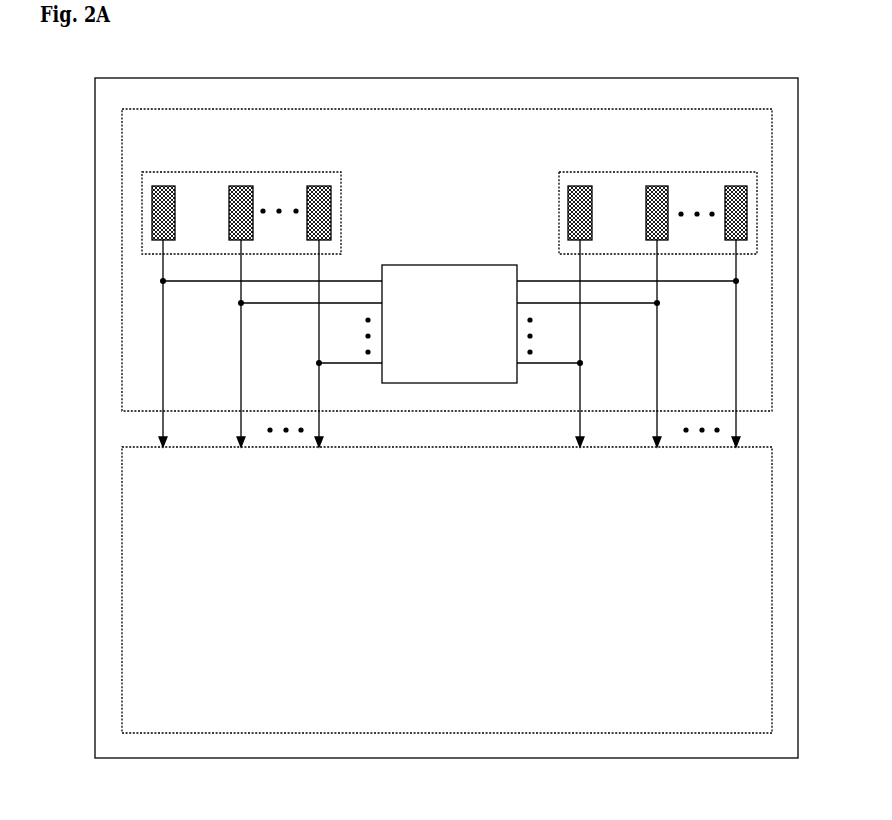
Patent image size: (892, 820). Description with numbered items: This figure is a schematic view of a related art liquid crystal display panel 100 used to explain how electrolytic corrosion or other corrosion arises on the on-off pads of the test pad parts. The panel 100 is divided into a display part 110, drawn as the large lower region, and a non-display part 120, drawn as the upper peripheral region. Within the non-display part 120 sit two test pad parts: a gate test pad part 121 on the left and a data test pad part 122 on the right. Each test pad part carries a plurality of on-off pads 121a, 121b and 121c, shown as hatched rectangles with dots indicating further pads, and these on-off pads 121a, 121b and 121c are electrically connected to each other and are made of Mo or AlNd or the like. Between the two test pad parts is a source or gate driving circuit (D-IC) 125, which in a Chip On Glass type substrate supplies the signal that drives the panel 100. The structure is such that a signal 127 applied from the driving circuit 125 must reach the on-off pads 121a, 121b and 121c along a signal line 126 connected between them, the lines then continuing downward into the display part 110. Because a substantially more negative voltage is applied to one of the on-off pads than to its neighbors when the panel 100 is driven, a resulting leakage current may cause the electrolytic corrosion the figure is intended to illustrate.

The liquid crystal display panel 100 is at (480, 758).
The display part 110 is at (772, 498).
The non-display part 120 is at (772, 265).
The gate test pad part 121 is at (265, 199).
The on-off pad 121a is at (165, 186).
The on-off pad 121b is at (243, 186).
The on-off pad 121c is at (320, 186).
The data test pad part 122 is at (559, 207).
The driving circuit (D-IC) 125 is at (420, 265).
The signal line 126 is at (163, 265).
The signal 127 is at (222, 282).